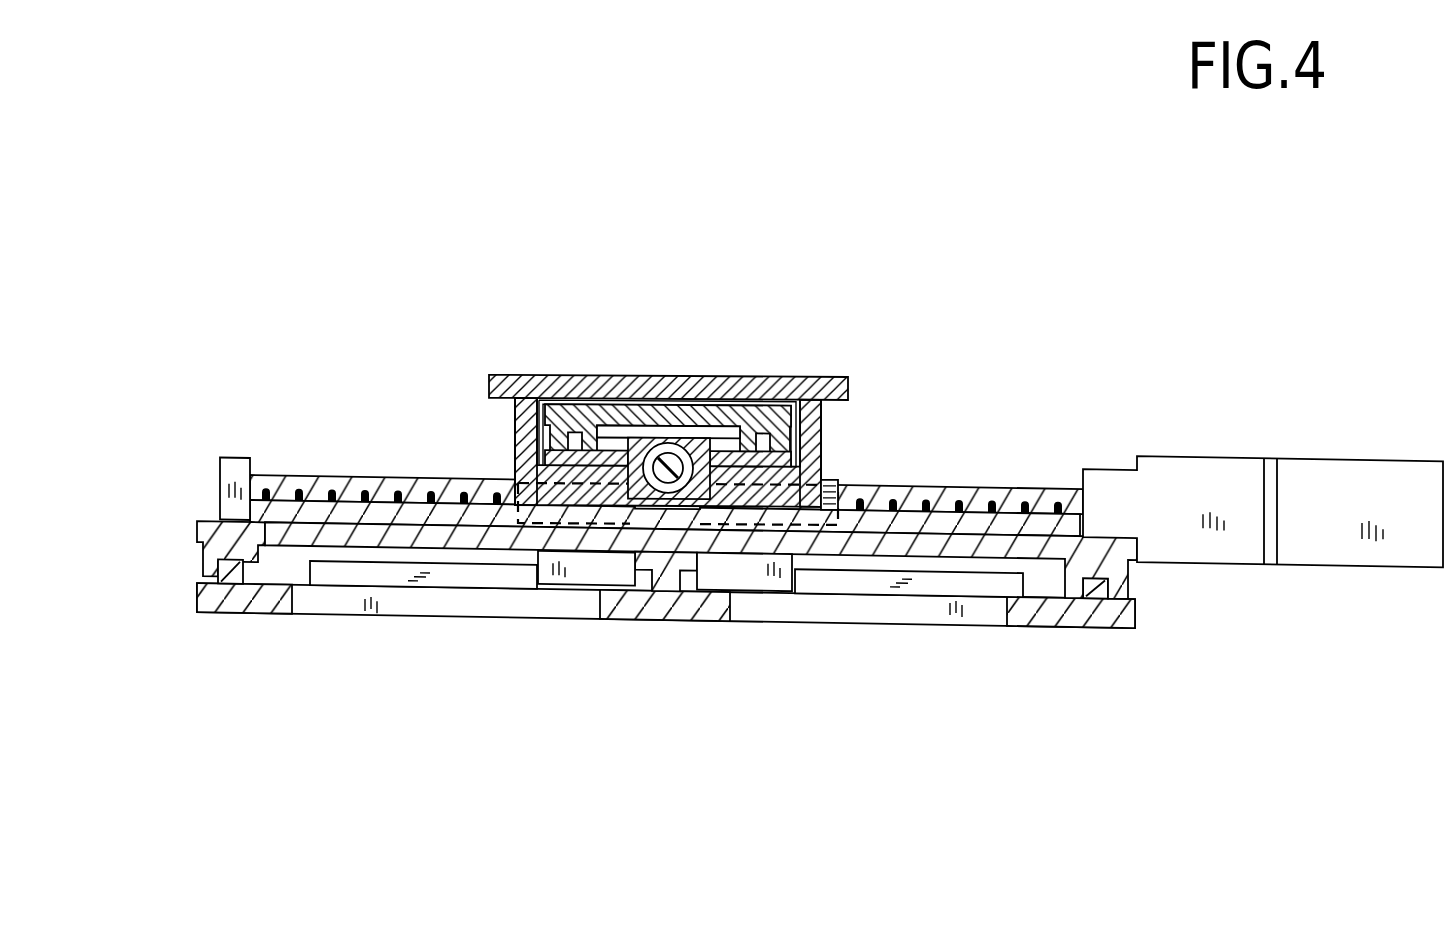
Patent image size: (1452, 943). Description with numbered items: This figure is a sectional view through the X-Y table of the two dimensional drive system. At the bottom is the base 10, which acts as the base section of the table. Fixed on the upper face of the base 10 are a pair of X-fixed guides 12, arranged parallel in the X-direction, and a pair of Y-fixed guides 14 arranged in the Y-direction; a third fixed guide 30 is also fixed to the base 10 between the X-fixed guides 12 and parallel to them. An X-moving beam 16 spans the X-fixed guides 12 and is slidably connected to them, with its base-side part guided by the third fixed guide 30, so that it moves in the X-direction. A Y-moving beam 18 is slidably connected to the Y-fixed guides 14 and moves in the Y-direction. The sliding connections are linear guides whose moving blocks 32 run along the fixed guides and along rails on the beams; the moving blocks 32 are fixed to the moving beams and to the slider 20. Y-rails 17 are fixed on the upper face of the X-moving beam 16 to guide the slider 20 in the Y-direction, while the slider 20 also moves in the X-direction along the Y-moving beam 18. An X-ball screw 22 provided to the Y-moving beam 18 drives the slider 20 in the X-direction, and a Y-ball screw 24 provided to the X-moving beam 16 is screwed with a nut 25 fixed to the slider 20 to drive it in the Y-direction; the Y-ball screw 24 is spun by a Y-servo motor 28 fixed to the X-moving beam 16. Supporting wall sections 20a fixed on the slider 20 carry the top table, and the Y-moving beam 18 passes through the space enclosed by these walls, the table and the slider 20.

The base 10 is at (300, 605).
The X-fixed guide 12 is at (240, 578).
The Y-fixed guide 14 is at (850, 596).
The X-moving beam 16 is at (328, 528).
The Y-rail 17 is at (378, 510).
The Y-moving beam 18 is at (722, 410).
The slider 20 is at (512, 433).
The supporting wall section 20a is at (513, 470).
The X-ball screw 22 is at (668, 440).
The Y-ball screw 24 is at (965, 493).
The nut 25 is at (838, 478).
The Y-servo motor 28 is at (1337, 472).
The third fixed guide 30 is at (665, 592).
The moving block 32 is at (200, 558).